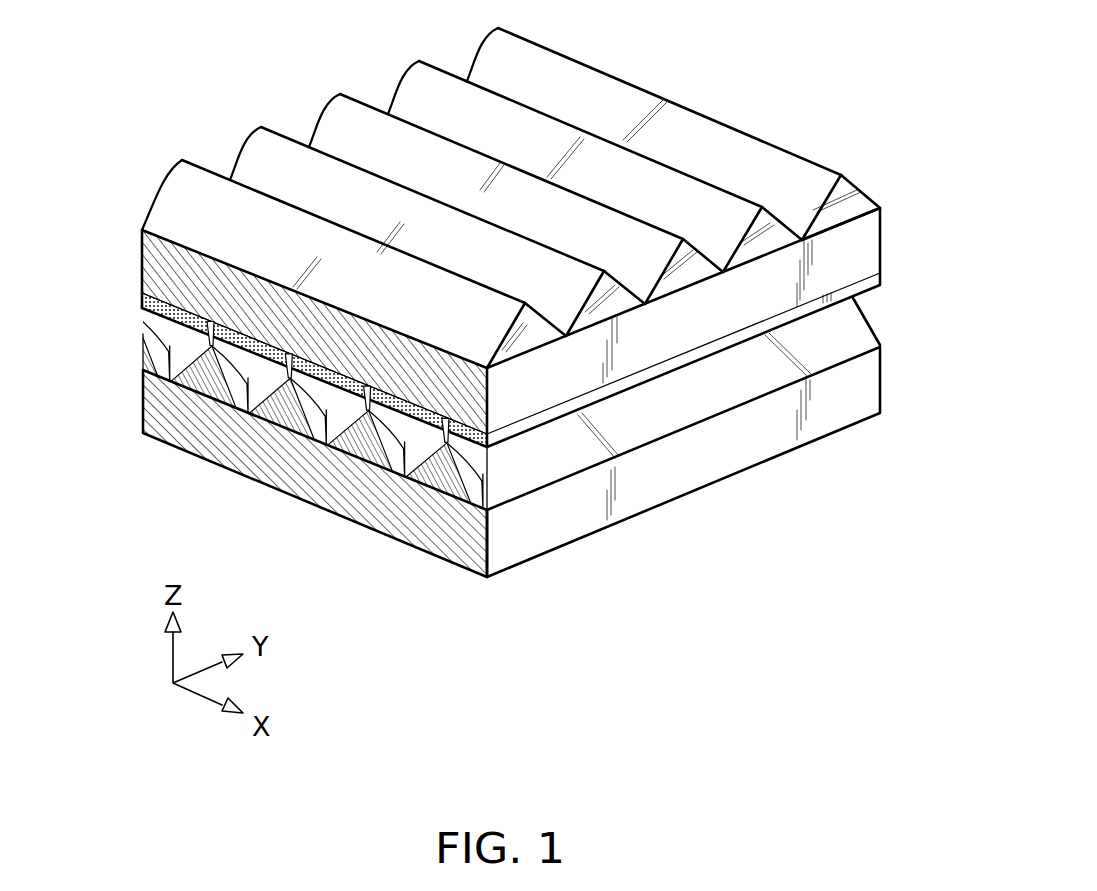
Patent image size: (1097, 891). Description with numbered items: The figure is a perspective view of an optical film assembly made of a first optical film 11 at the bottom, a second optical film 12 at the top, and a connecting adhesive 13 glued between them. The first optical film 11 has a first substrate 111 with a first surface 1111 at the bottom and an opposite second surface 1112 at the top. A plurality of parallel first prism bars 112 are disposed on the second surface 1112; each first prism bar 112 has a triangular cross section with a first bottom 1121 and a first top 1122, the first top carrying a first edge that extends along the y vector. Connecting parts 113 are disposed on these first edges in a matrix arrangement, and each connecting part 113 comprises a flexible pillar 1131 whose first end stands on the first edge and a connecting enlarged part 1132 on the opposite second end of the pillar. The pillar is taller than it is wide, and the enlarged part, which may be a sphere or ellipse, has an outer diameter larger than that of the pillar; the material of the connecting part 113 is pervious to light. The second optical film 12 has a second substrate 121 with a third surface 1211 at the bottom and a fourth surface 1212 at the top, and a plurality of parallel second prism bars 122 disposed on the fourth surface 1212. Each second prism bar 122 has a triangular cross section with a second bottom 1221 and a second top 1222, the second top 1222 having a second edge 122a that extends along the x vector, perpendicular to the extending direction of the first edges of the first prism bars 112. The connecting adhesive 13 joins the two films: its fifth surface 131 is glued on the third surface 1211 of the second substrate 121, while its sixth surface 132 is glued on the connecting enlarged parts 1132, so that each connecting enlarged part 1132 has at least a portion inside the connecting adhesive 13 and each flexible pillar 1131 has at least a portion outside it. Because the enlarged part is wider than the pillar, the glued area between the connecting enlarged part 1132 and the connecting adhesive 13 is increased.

The first optical film 11 is at (476, 463).
The first substrate 111 is at (633, 483).
The first surface 1111 is at (350, 520).
The second surface 1112 is at (490, 448).
The first prism bar 112 is at (613, 430).
The first bottom 1121 is at (447, 497).
The first top 1122 is at (468, 482).
The connecting part 113 is at (276, 421).
The flexible pillar 1131 is at (250, 410).
The connecting enlarged part 1132 is at (207, 323).
The second optical film 12 is at (518, 234).
The second substrate 121 is at (167, 272).
The third surface 1211 is at (858, 282).
The fourth surface 1212 is at (852, 215).
The second prism bar 122 is at (479, 190).
The second edge 122a is at (211, 170).
The second bottom 1221 is at (823, 230).
The second top 1222 is at (795, 151).
The connecting adhesive 13 is at (314, 314).
The fifth surface 131 is at (398, 397).
The sixth surface 132 is at (412, 420).